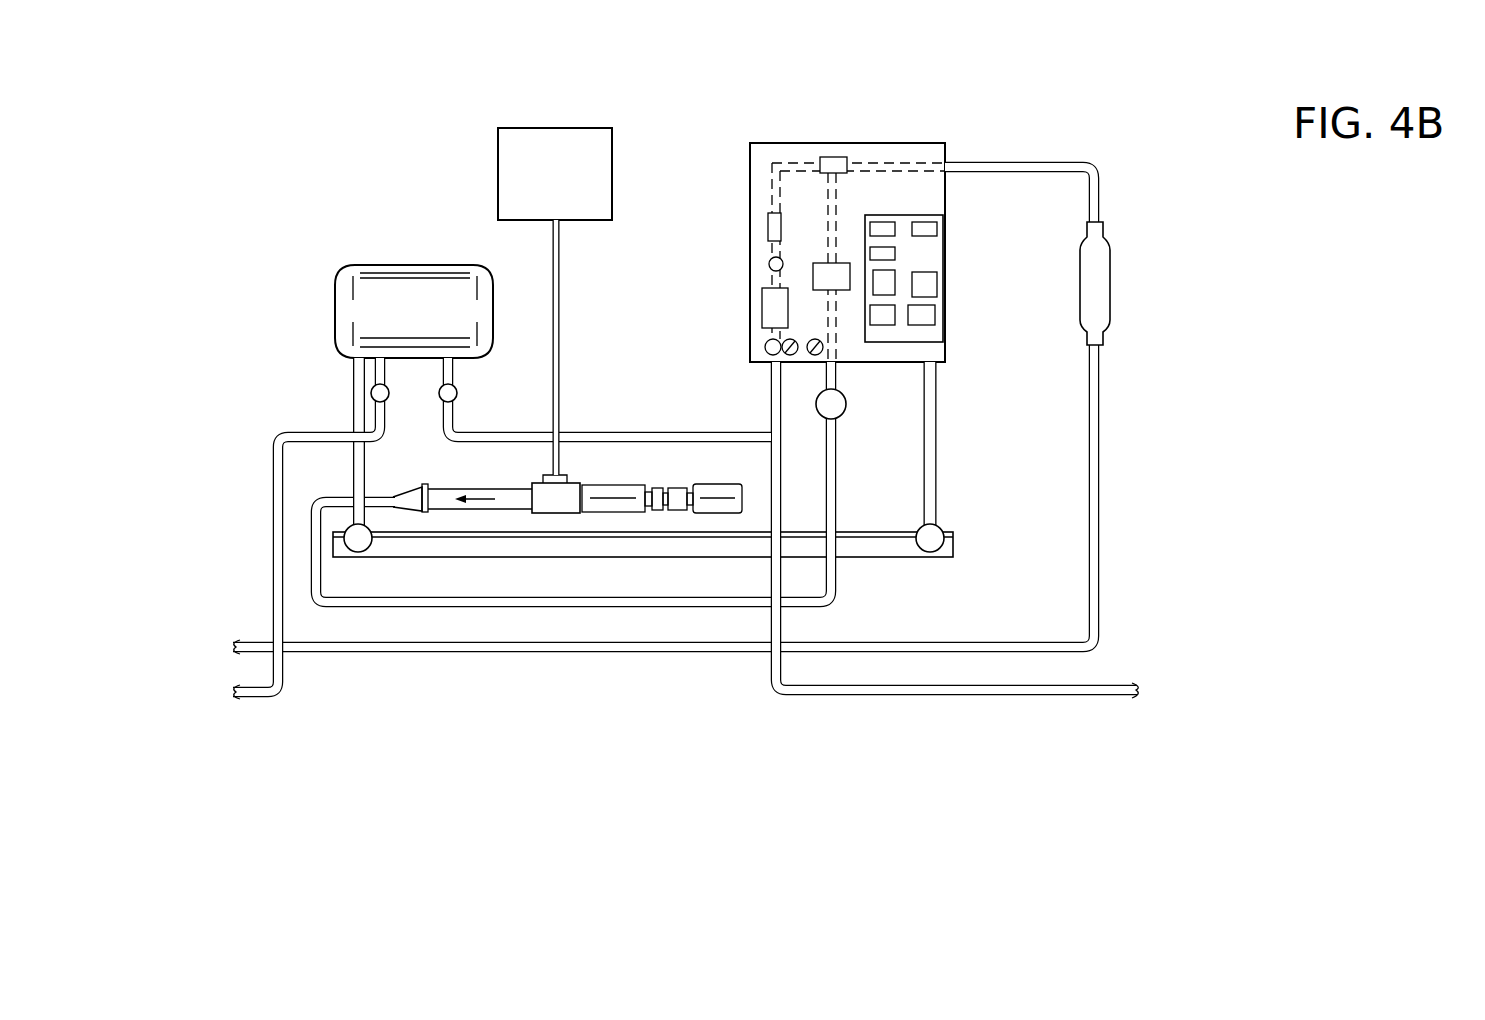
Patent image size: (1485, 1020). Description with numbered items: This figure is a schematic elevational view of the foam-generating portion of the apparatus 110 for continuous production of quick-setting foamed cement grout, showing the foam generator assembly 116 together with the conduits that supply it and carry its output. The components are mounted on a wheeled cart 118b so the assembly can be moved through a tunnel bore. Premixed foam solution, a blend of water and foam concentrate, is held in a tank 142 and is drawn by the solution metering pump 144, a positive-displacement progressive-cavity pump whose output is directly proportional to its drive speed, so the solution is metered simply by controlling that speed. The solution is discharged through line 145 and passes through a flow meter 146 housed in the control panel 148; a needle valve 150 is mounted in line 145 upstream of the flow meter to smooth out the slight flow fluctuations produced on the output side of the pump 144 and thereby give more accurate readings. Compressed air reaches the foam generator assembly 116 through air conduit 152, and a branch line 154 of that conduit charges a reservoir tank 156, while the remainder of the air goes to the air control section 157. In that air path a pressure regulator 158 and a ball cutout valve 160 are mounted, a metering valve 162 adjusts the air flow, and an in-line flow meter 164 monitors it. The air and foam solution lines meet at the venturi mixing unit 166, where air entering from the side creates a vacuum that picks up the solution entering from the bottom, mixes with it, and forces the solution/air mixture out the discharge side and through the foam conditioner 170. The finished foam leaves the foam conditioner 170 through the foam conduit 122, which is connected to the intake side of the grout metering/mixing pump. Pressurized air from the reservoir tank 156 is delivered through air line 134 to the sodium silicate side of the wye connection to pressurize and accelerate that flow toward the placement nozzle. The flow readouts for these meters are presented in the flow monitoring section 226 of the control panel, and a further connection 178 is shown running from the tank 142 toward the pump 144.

The apparatus 110 is at (1145, 113).
The foam generator assembly 116 is at (805, 116).
The cart 118b is at (876, 548).
The foam conduit 122 is at (415, 652).
The air line 134 is at (282, 674).
The tank 142 is at (580, 195).
The solution metering pump 144 is at (470, 490).
The line 145 is at (570, 600).
The flow meter 146 is at (820, 263).
The control panel 148 is at (934, 138).
The needle valve 150 is at (847, 403).
The air conduit 152 is at (1000, 695).
The branch line 154 is at (488, 347).
The reservoir tank 156 is at (440, 327).
The air control section 157 is at (748, 352).
The pressure regulator 158 is at (757, 344).
The ball cutout valve 160 is at (766, 226).
The metering valve 162 is at (769, 265).
The in-line flow meter 164 is at (762, 306).
The venturi mixing unit 166 is at (838, 157).
The foam conditioner 170 is at (1105, 268).
The signal line 178 is at (553, 275).
The flow monitoring section 226 is at (921, 341).